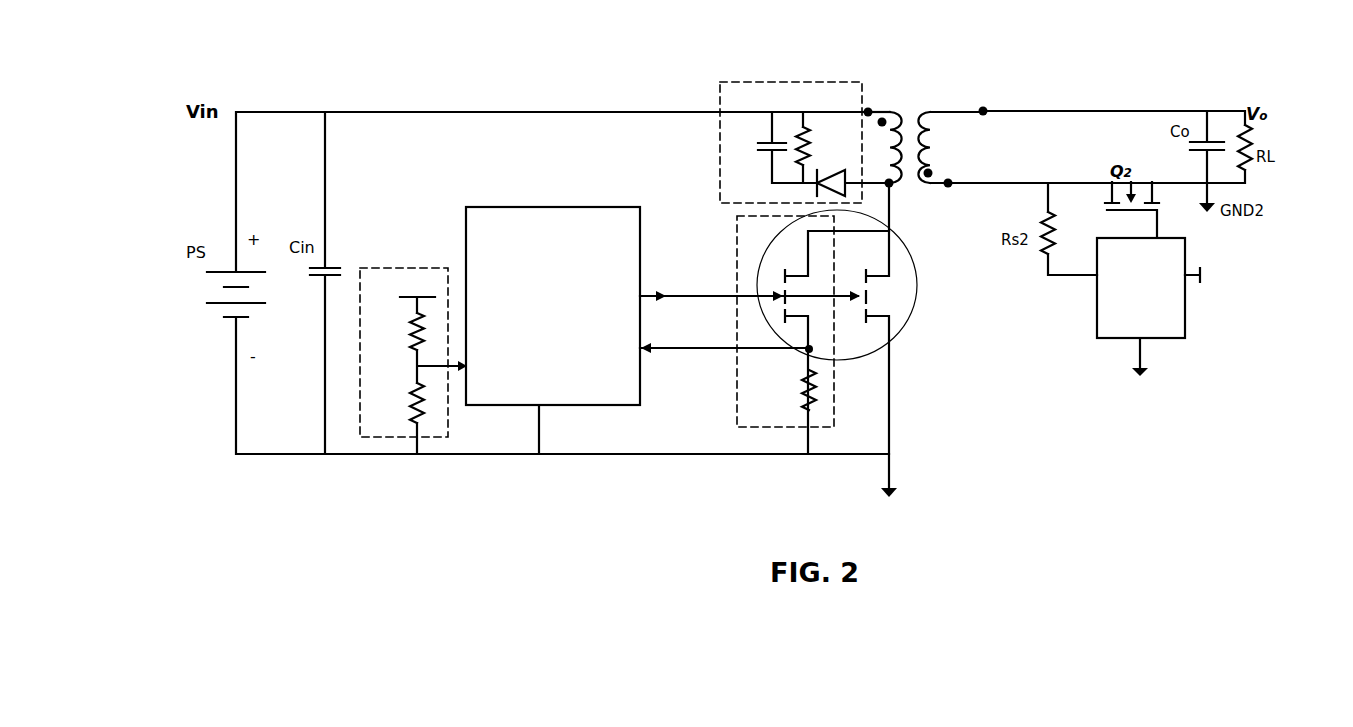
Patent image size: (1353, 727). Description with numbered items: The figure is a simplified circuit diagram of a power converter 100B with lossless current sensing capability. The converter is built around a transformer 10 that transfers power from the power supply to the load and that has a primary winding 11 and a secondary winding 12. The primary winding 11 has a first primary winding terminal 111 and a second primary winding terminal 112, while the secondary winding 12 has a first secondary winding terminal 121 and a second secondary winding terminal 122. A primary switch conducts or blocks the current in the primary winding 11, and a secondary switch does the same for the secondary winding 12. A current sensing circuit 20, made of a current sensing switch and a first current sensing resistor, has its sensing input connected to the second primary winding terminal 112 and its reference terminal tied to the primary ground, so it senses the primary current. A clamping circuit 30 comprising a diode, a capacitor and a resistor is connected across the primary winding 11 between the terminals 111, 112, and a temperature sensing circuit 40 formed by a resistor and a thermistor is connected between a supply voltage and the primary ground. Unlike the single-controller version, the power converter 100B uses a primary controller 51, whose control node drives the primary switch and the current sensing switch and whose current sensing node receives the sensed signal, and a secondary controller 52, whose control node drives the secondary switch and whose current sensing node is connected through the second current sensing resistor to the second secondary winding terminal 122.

The power converter 100B is at (345, 46).
The transformer 10 is at (924, 122).
The primary winding 11 is at (884, 147).
The secondary winding 12 is at (950, 147).
The first primary winding terminal 111 is at (869, 106).
The second primary winding terminal 112 is at (891, 189).
The first secondary winding terminal 121 is at (985, 106).
The second secondary winding terminal 122 is at (950, 189).
The current sensing circuit 20 is at (748, 370).
The clamping circuit 30 is at (740, 103).
The temperature sensing circuit 40 is at (377, 285).
The primary controller 51 is at (474, 220).
The secondary controller 52 is at (1178, 302).